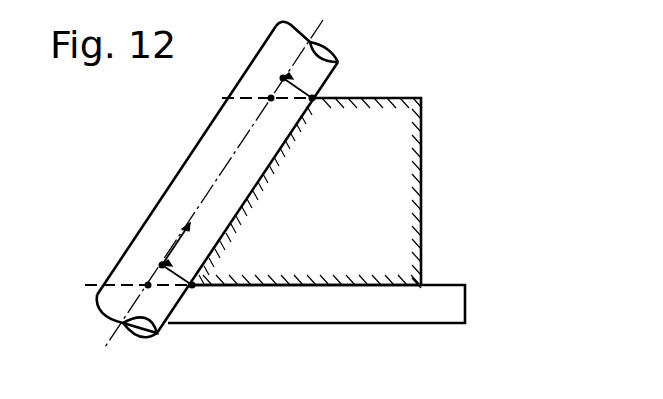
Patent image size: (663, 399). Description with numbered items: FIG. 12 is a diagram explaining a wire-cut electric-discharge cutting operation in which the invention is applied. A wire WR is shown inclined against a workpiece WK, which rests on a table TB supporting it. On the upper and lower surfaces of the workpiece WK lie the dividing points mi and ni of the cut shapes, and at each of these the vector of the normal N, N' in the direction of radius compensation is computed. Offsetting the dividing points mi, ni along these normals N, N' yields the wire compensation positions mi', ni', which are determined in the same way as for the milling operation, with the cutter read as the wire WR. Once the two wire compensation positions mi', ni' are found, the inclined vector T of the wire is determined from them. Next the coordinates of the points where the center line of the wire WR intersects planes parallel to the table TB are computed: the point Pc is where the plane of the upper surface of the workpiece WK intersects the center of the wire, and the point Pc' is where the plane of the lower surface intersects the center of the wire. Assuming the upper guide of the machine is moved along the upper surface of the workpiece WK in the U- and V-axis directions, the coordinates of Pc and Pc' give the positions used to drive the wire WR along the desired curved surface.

The wire WR is at (269, 47).
The workpiece WK is at (421, 252).
The table TB is at (460, 302).
The point where wire center line intersects upper surface plane Pc is at (278, 114).
The point where wire center line intersects lower surface plane Pc' is at (160, 299).
The dividing point mi is at (327, 114).
The wire compensation position mi' is at (272, 73).
The dividing point ni is at (210, 275).
The wire compensation position ni' is at (155, 250).
The normal vector N is at (300, 79).
The normal vector N' is at (180, 264).
The inclined vector of the wire T is at (220, 205).